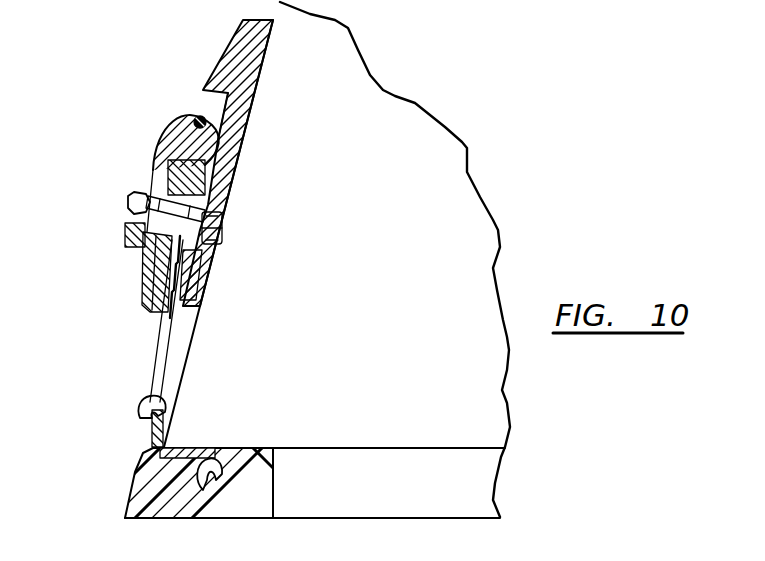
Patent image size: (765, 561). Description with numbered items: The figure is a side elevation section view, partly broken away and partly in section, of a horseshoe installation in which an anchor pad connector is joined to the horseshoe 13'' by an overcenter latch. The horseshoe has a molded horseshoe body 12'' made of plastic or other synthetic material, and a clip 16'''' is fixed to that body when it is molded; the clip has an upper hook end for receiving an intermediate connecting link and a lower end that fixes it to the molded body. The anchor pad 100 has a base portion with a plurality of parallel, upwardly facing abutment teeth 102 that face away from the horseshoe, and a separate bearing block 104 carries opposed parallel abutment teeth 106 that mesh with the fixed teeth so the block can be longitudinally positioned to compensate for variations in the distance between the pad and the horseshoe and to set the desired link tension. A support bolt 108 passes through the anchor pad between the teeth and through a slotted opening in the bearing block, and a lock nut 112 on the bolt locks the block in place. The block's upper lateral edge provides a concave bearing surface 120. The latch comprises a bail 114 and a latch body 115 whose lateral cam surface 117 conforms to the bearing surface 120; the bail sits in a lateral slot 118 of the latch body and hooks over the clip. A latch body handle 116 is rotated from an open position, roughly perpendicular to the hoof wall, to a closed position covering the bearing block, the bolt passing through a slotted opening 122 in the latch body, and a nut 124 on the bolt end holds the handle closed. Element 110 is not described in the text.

The anchor pad 100 is at (235, 42).
The abutment teeth 102 is at (237, 178).
The bearing block 104 is at (138, 290).
The abutment teeth 106 is at (206, 285).
The support bolt 108 is at (220, 218).
The hinge leaf 110 is at (142, 307).
The lock nut 112 is at (138, 248).
The bail 114 is at (153, 362).
The latch body 115 is at (167, 132).
The latch body handle 116 is at (130, 275).
The lateral cam surface 117 is at (163, 163).
The lateral slot 118 is at (203, 113).
The bearing surface 120 is at (172, 132).
The slotted opening 122 is at (130, 227).
The nut 124 is at (143, 193).
The clip 16'''' is at (110, 409).
The horseshoe 13'' is at (173, 468).
The molded horseshoe body 12'' is at (197, 535).